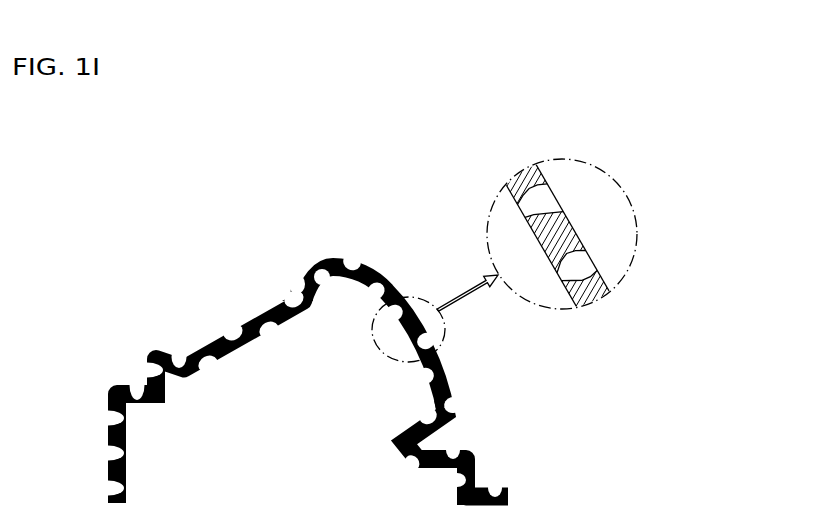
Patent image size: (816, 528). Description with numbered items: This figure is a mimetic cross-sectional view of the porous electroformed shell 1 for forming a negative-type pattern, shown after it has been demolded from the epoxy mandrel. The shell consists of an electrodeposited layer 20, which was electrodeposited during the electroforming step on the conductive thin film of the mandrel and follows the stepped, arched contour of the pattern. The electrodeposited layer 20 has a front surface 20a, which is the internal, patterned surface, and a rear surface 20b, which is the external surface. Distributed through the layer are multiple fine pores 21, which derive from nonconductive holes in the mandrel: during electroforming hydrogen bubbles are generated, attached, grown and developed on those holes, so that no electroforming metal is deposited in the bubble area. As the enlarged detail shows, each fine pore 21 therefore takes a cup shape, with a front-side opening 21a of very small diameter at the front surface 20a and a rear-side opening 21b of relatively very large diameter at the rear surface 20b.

The porous electroformed shell 1 is at (219, 302).
The electrodeposited layer 20 is at (392, 311).
The front surface 20a is at (257, 340).
The rear surface 20b is at (448, 386).
The fine pore 21 is at (379, 285).
The front-side opening 21a is at (563, 277).
The rear-side opening 21b is at (600, 258).